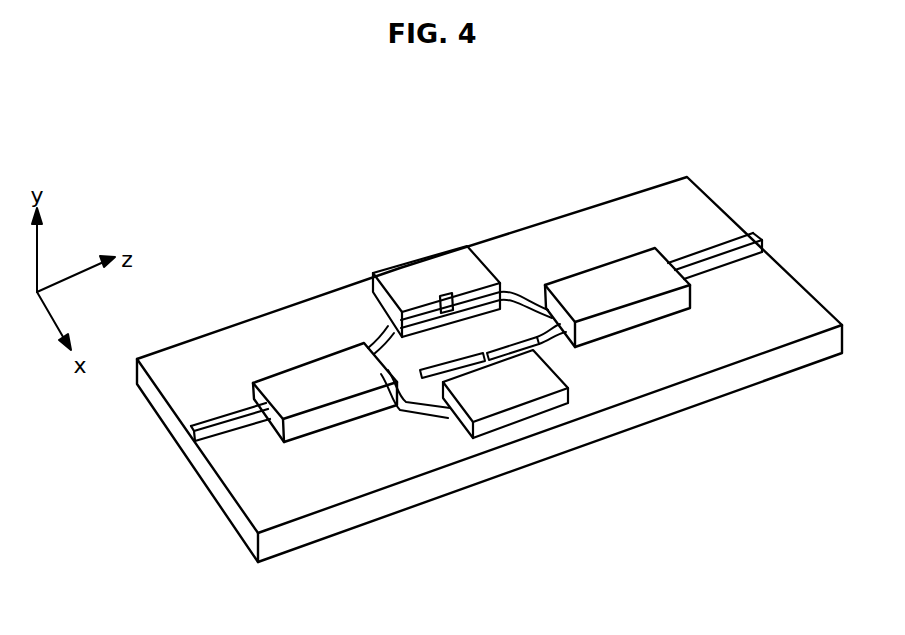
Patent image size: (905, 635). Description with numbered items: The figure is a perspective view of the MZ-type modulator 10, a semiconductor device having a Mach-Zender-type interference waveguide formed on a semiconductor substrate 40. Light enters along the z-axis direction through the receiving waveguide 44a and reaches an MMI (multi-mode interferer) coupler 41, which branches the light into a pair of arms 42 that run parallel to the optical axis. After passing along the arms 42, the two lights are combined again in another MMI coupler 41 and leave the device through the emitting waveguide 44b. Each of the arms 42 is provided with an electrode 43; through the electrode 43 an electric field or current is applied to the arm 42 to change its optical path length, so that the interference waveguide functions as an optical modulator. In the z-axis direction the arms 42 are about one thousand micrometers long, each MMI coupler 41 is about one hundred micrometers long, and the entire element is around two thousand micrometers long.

The MZ-type modulator 10 is at (667, 88).
The semiconductor substrate 40 is at (330, 522).
The MMI coupler 41 is at (588, 282).
The arms 42 is at (523, 360).
The electrode 43 is at (385, 323).
The receiving waveguide 44a is at (228, 426).
The emitting waveguide 44b is at (722, 238).